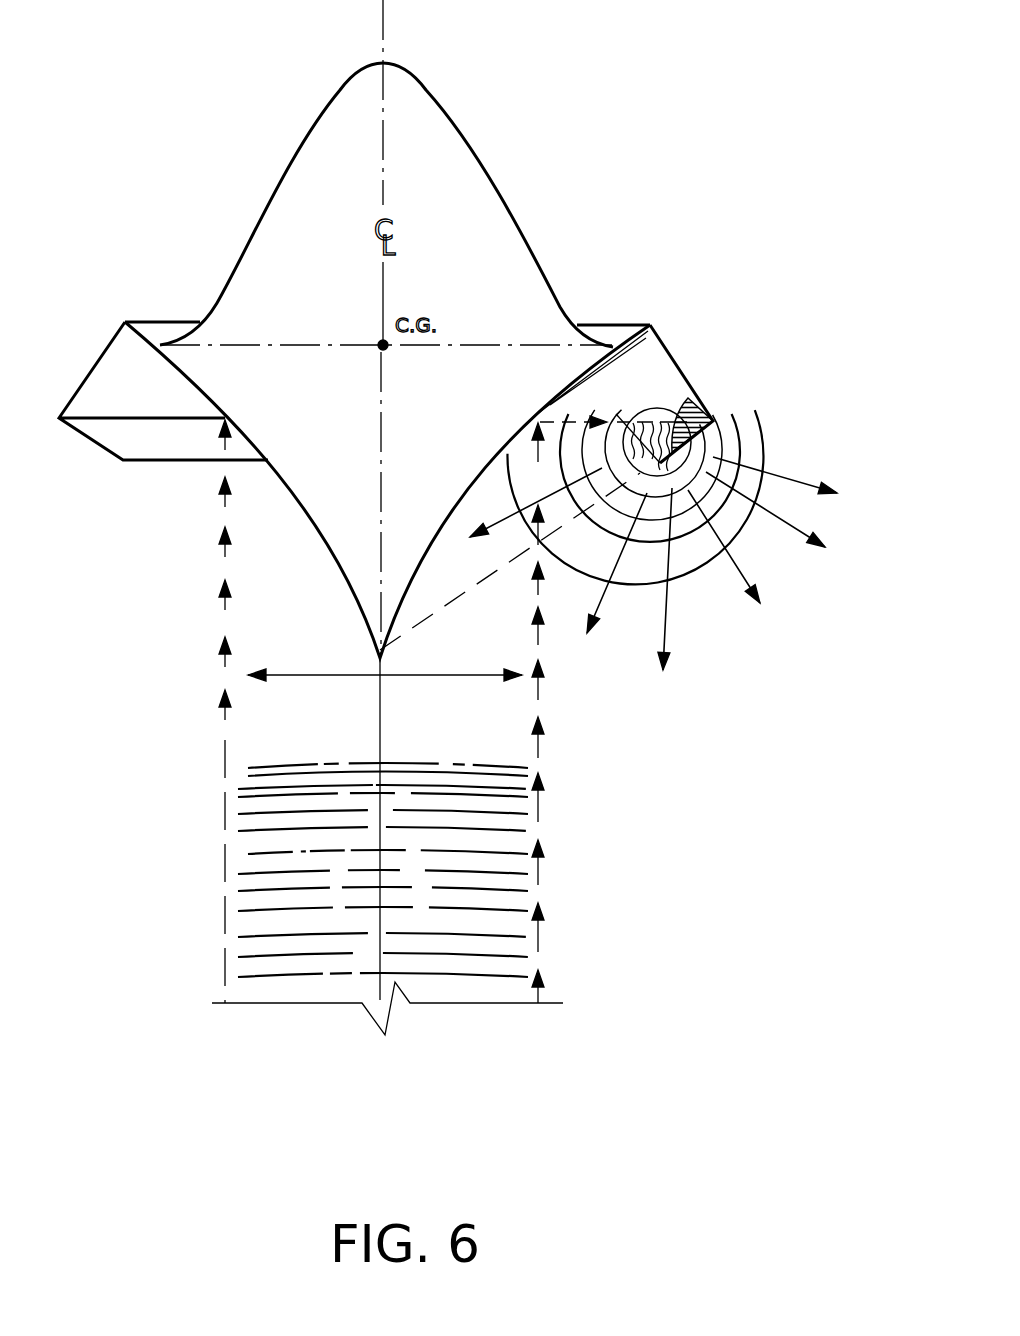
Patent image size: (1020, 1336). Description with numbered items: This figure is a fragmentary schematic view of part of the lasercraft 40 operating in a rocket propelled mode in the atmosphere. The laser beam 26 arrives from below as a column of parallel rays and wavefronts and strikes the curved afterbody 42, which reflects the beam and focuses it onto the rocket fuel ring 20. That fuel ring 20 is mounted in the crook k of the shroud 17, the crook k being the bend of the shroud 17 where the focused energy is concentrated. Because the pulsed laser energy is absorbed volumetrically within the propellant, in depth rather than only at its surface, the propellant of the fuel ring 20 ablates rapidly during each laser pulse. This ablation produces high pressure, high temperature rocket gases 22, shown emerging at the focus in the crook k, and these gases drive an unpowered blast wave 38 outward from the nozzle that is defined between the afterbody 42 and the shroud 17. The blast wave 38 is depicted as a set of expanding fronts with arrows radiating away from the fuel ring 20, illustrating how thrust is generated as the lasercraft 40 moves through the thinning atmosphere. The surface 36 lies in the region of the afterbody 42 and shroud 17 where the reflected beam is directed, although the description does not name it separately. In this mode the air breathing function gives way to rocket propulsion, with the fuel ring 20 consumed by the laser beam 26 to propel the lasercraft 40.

The lasercraft 40 is at (580, 87).
The afterbody 42 is at (290, 526).
The laser beam 26 is at (490, 853).
The reflective optic surface 36 is at (573, 410).
The shroud 17 is at (660, 423).
The rocket gases 22 is at (698, 403).
The rocket fuel ring 20 is at (717, 420).
The blast wave 38 is at (693, 587).
The crook of shroud k is at (720, 418).